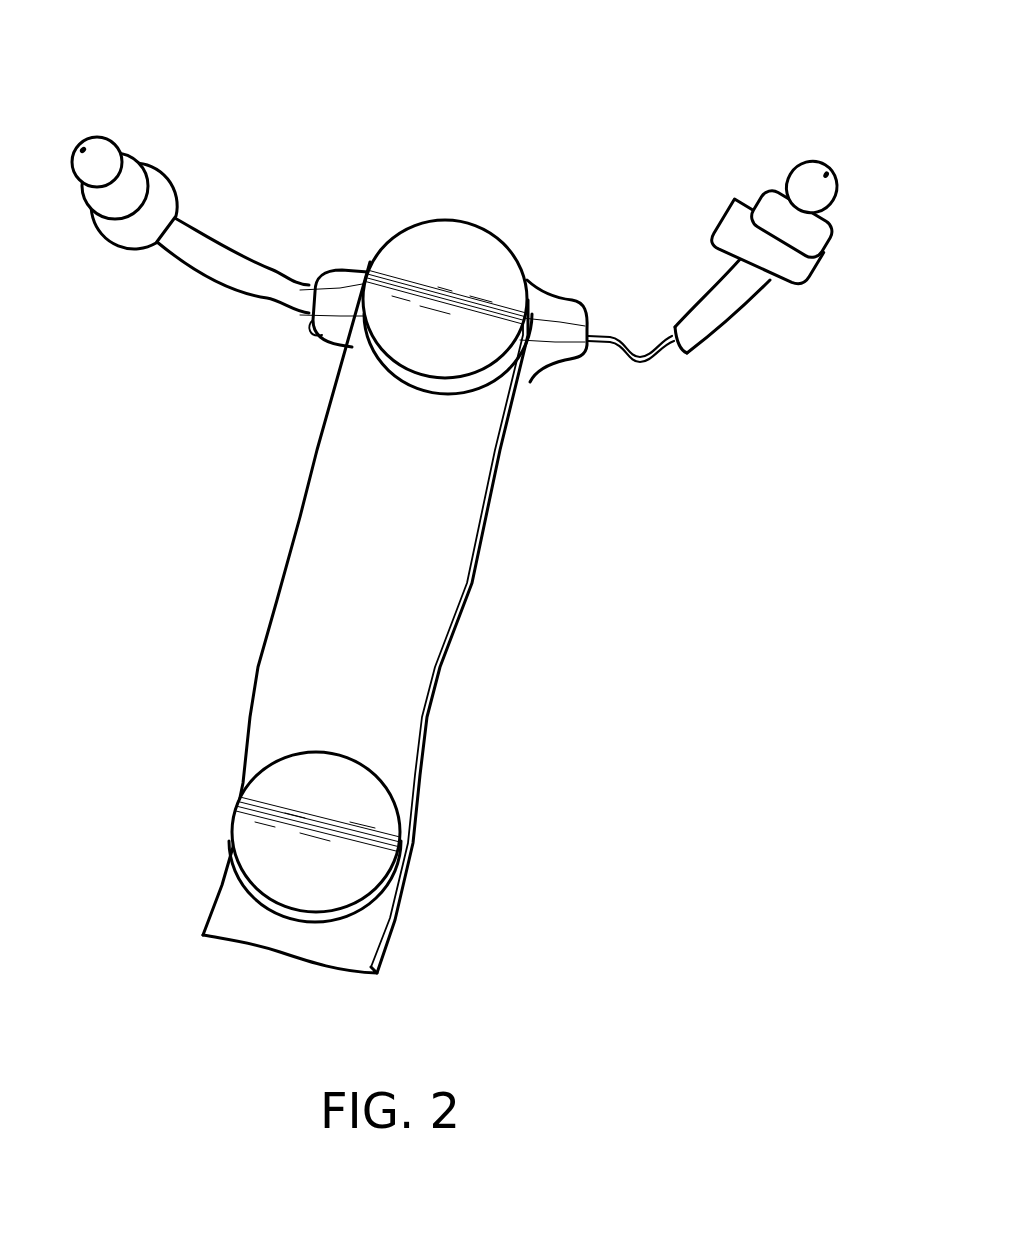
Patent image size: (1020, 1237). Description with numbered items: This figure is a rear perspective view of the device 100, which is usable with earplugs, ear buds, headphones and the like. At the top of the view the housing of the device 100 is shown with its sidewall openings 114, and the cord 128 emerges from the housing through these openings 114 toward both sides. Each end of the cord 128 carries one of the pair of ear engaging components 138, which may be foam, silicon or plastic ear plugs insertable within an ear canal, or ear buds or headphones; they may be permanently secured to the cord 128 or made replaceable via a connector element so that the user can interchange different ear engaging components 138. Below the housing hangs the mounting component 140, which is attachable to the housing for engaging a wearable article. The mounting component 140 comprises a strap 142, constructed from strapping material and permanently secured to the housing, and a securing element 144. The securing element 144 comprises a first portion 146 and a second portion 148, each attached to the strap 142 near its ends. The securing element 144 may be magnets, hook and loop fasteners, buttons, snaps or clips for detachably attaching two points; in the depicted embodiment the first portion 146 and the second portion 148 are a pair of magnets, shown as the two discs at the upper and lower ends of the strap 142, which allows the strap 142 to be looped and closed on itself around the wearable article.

The device 100 is at (530, 126).
The openings 114 is at (594, 336).
The cord 128 is at (262, 246).
The ear engaging components 138 is at (90, 115).
The mounting component 140 is at (486, 585).
The strap 142 is at (402, 580).
The securing element 144 is at (376, 380).
The first portion 146 is at (480, 266).
The second portion 148 is at (355, 791).